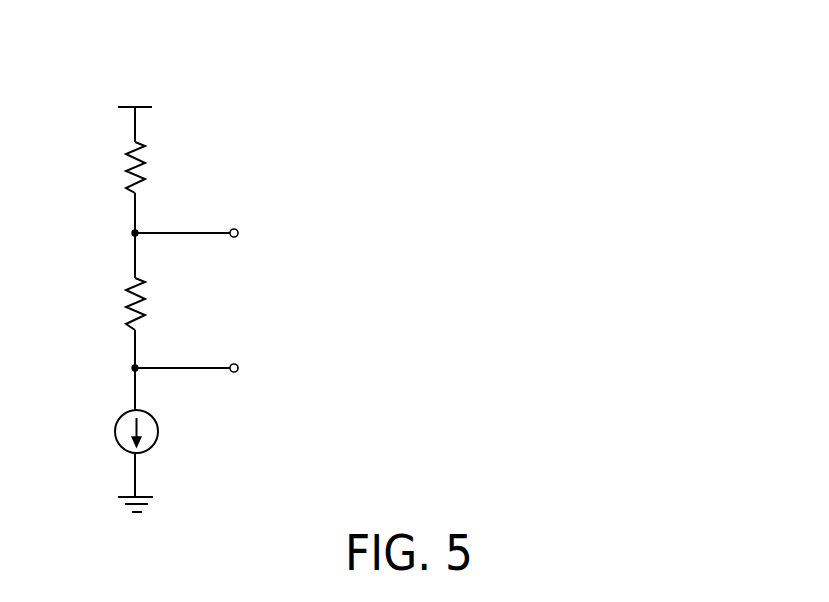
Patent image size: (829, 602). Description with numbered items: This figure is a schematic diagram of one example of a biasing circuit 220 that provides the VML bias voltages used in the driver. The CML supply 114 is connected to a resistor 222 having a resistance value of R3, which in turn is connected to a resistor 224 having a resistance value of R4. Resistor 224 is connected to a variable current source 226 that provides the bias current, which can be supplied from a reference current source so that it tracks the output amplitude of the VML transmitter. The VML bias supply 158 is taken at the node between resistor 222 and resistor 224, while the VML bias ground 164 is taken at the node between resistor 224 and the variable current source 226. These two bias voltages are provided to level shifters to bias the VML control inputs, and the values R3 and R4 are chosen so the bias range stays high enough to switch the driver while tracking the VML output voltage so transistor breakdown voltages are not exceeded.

The CML supply 114 is at (188, 69).
The biasing circuit 220 is at (452, 123).
The resistor 222 is at (143, 157).
The resistor 224 is at (143, 293).
The VML bias supply 158 is at (352, 214).
The VML bias ground 164 is at (353, 351).
The variable current source 226 is at (115, 433).